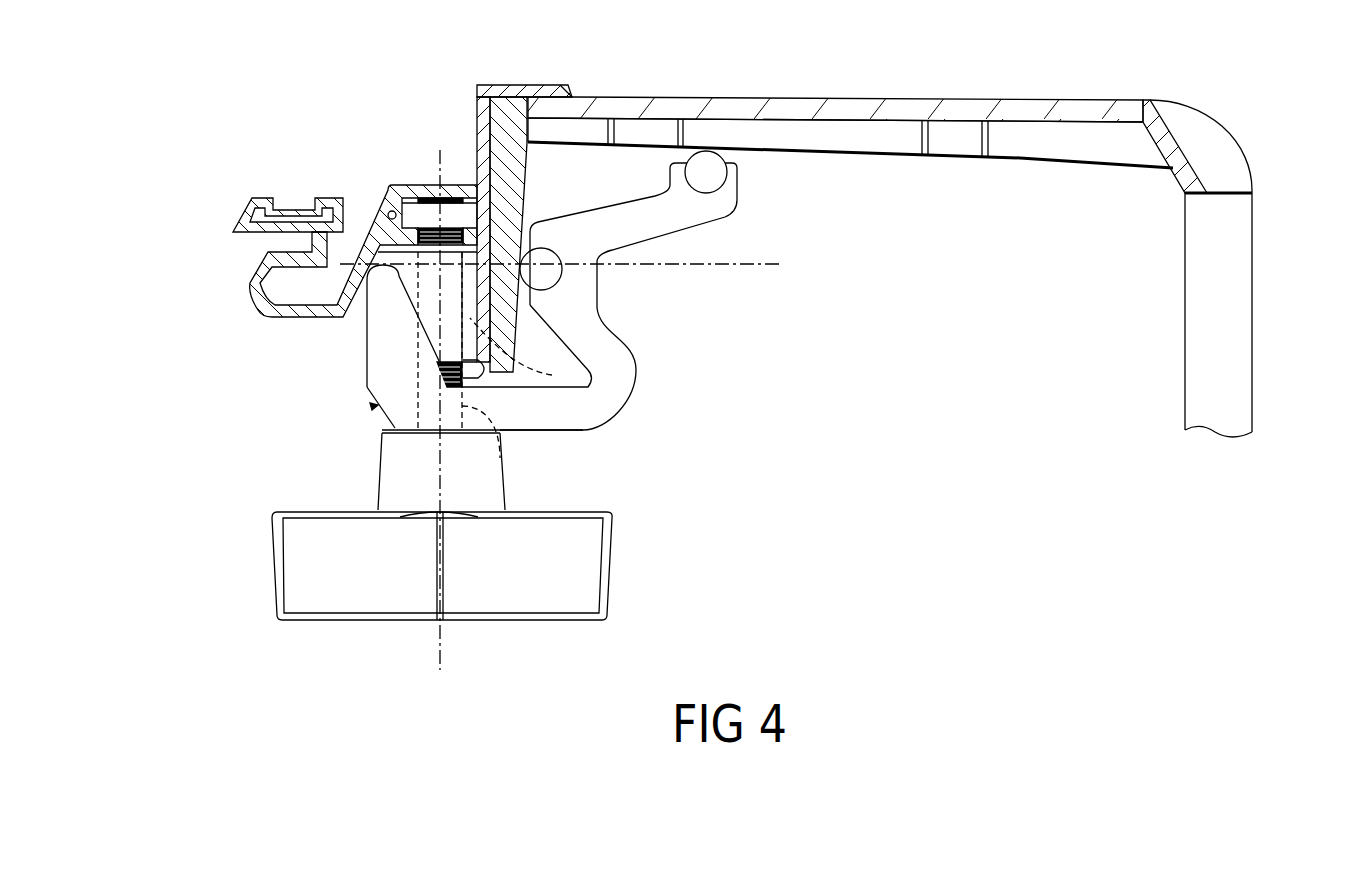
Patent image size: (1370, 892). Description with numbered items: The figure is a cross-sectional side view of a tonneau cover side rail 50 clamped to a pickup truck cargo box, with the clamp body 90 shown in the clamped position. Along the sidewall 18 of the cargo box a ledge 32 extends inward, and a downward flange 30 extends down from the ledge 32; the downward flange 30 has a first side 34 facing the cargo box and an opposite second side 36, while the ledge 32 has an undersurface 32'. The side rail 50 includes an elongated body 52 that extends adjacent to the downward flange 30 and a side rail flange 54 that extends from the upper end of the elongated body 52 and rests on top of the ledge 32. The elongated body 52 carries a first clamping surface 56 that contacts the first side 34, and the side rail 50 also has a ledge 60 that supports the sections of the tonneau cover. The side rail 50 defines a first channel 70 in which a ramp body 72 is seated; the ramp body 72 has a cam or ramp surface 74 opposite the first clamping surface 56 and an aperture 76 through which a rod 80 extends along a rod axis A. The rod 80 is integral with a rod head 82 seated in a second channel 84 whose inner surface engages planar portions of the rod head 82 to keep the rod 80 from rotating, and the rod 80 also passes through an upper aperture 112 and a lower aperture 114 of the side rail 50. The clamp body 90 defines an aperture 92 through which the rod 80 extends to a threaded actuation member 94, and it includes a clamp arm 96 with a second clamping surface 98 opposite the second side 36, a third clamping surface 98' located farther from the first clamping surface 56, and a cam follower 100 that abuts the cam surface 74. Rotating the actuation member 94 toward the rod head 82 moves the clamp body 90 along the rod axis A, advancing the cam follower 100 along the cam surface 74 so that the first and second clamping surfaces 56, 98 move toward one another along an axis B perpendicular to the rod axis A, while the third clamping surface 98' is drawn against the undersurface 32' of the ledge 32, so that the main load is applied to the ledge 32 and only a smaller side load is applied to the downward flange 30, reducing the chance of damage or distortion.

The sidewall 18 is at (1240, 312).
The downward flange 30 is at (522, 172).
The ledge 32 is at (835, 84).
The undersurface of the ledge 32' is at (850, 183).
The first side 34 is at (510, 110).
The second side 36 is at (533, 150).
The side rail 50 is at (368, 185).
The elongated body 52 is at (478, 115).
The side rail flange 54 is at (512, 85).
The first clamping surface 56 is at (490, 147).
The ledge of the side rail 60 is at (243, 213).
The first channel 70 is at (597, 311).
The ramp body 72 is at (494, 303).
The cam or ramp surface 74 is at (428, 338).
The aperture 76 is at (529, 353).
The rod 80 is at (428, 372).
The rod head 82 is at (425, 210).
The second channel 84 is at (388, 211).
The clamp body 90 is at (372, 410).
The aperture 92 is at (500, 458).
The actuation member 94 is at (585, 568).
The clamp arm 96 is at (622, 386).
The second clamping surface 98 is at (577, 272).
The third clamping surface 98' is at (741, 188).
The cam follower 100 is at (415, 322).
The upper aperture 112 is at (386, 158).
The lower aperture 114 is at (470, 372).
The rod axis A is at (440, 150).
The axis B is at (738, 264).